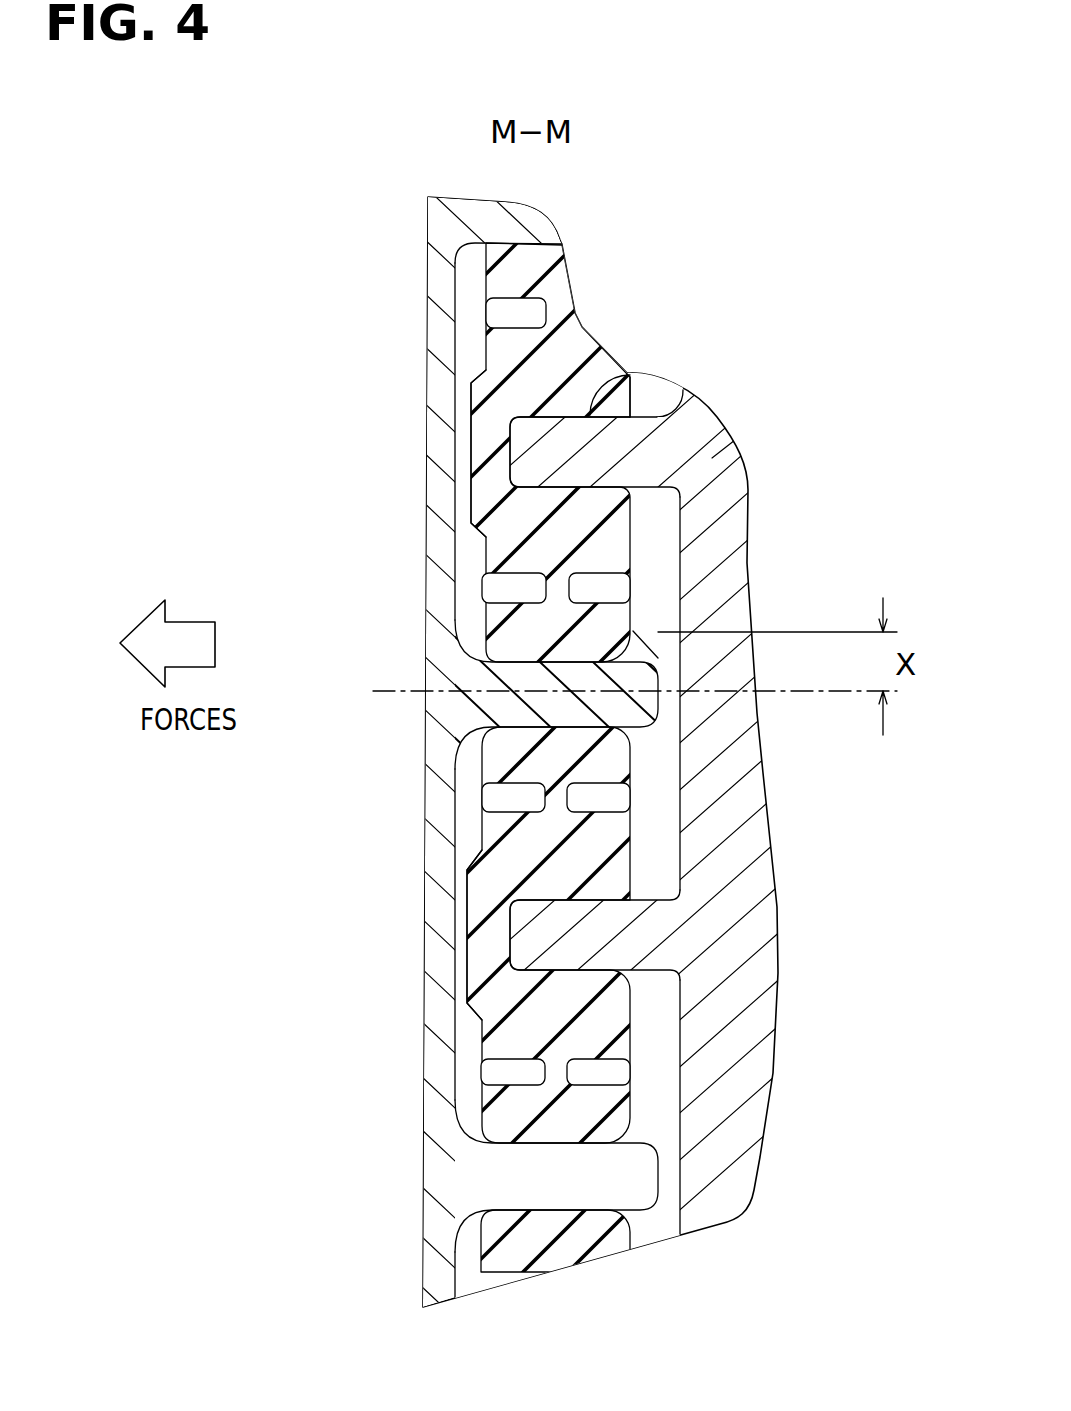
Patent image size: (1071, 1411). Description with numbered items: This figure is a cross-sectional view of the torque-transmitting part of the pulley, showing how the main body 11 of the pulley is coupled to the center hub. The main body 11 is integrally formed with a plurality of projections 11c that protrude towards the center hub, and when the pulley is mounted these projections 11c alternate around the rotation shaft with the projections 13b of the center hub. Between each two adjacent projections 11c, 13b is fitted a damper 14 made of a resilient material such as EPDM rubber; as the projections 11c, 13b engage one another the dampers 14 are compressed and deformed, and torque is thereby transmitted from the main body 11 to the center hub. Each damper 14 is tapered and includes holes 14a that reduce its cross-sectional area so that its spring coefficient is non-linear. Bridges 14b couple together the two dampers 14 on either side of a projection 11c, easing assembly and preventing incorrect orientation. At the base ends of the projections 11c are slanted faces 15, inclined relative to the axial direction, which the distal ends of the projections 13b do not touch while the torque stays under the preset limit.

The main body of the pulley 11 is at (737, 440).
The projections 11c is at (575, 447).
The projections 13b is at (573, 685).
The damper 14 is at (572, 350).
The holes 14a is at (500, 800).
The bridges 14b is at (488, 443).
The slanted faces 15 is at (665, 612).